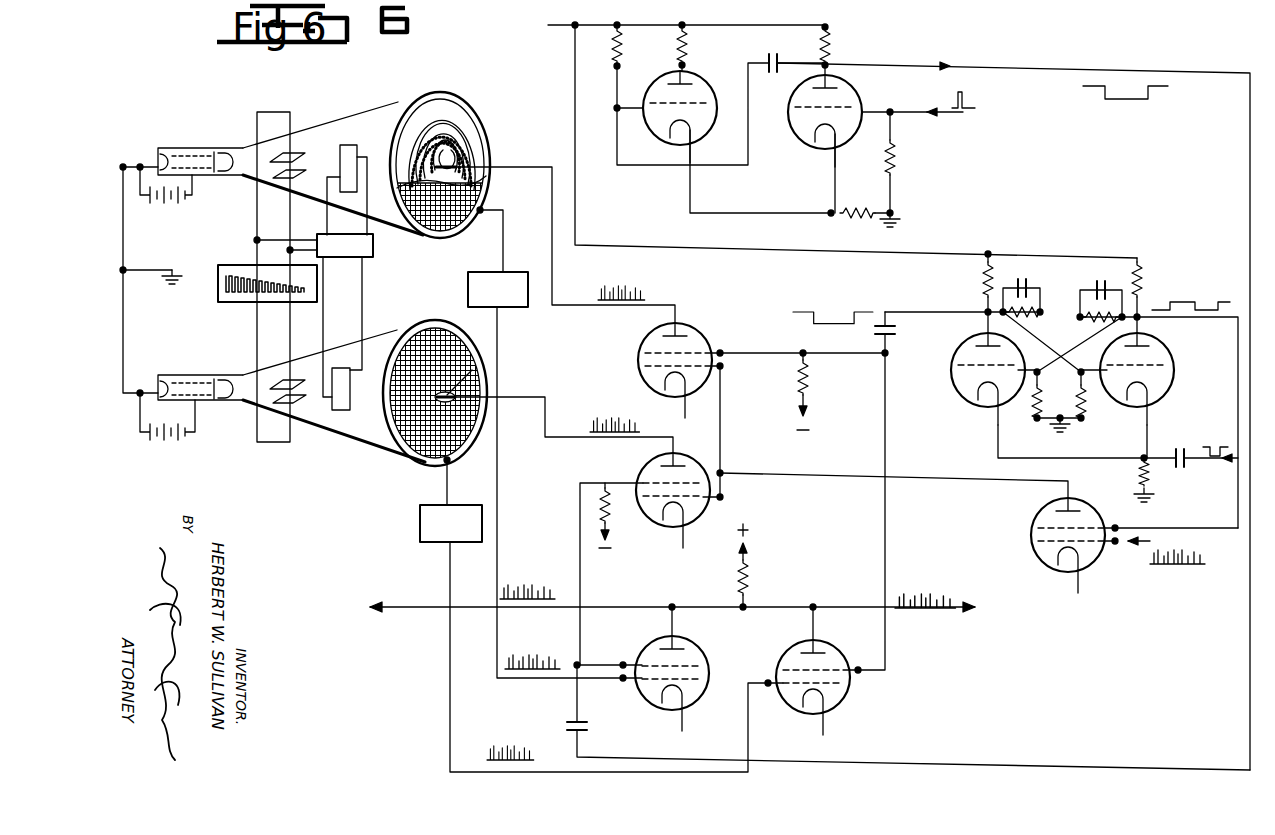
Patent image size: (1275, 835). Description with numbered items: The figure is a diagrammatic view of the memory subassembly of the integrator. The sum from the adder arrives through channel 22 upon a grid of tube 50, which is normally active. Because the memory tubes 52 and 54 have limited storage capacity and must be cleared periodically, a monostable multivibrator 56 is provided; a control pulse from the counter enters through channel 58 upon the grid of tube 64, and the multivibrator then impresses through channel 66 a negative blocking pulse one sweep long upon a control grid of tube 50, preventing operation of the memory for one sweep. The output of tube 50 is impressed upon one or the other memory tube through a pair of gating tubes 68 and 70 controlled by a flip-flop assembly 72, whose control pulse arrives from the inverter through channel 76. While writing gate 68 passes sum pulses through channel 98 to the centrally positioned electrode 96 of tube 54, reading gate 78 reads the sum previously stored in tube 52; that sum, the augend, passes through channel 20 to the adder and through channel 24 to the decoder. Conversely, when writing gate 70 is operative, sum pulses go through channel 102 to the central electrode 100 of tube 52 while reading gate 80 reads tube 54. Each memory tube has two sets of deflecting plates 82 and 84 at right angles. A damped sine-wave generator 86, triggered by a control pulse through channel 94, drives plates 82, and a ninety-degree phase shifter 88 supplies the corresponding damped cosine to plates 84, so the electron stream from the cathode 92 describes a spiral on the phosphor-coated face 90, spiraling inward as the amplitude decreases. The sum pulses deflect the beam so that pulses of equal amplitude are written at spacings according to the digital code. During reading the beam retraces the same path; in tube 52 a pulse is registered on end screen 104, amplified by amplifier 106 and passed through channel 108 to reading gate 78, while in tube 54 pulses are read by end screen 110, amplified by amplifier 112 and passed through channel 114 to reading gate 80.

The channel 20 is at (934, 612).
The channel 22 is at (1140, 548).
The channel 24 is at (420, 609).
The tube 50 is at (1057, 574).
The memory tube 52 is at (386, 446).
The memory tube 54 is at (358, 112).
The monostable multivibrator 56 is at (862, 48).
The channel 58 is at (948, 118).
The tube 64 is at (862, 100).
The channel 66 is at (1050, 70).
The writing gate tube 68 is at (708, 338).
The writing gate tube 70 is at (690, 460).
The flip-flop assembly 72 is at (963, 413).
The channel 76 is at (1198, 466).
The reading gate tube 78 is at (850, 690).
The reading gate tube 80 is at (707, 660).
The deflecting plates 82 is at (300, 155).
The deflecting plates 84 is at (358, 150).
The damped sine-wave generator 86 is at (228, 303).
The 90° phase shifter 88 is at (373, 252).
The face 90 is at (478, 132).
The cathode 92 is at (165, 150).
The channel 94 is at (287, 308).
The centrally positioned electrode 96 is at (458, 160).
The channel 98 is at (532, 167).
The central electrode 100 is at (474, 368).
The channel 102 is at (548, 397).
The end screen 104 is at (465, 448).
The amplifier 106 is at (420, 527).
The channel 108 is at (455, 727).
The end screen 110 is at (470, 236).
The amplifier 112 is at (506, 272).
The channel 114 is at (498, 525).